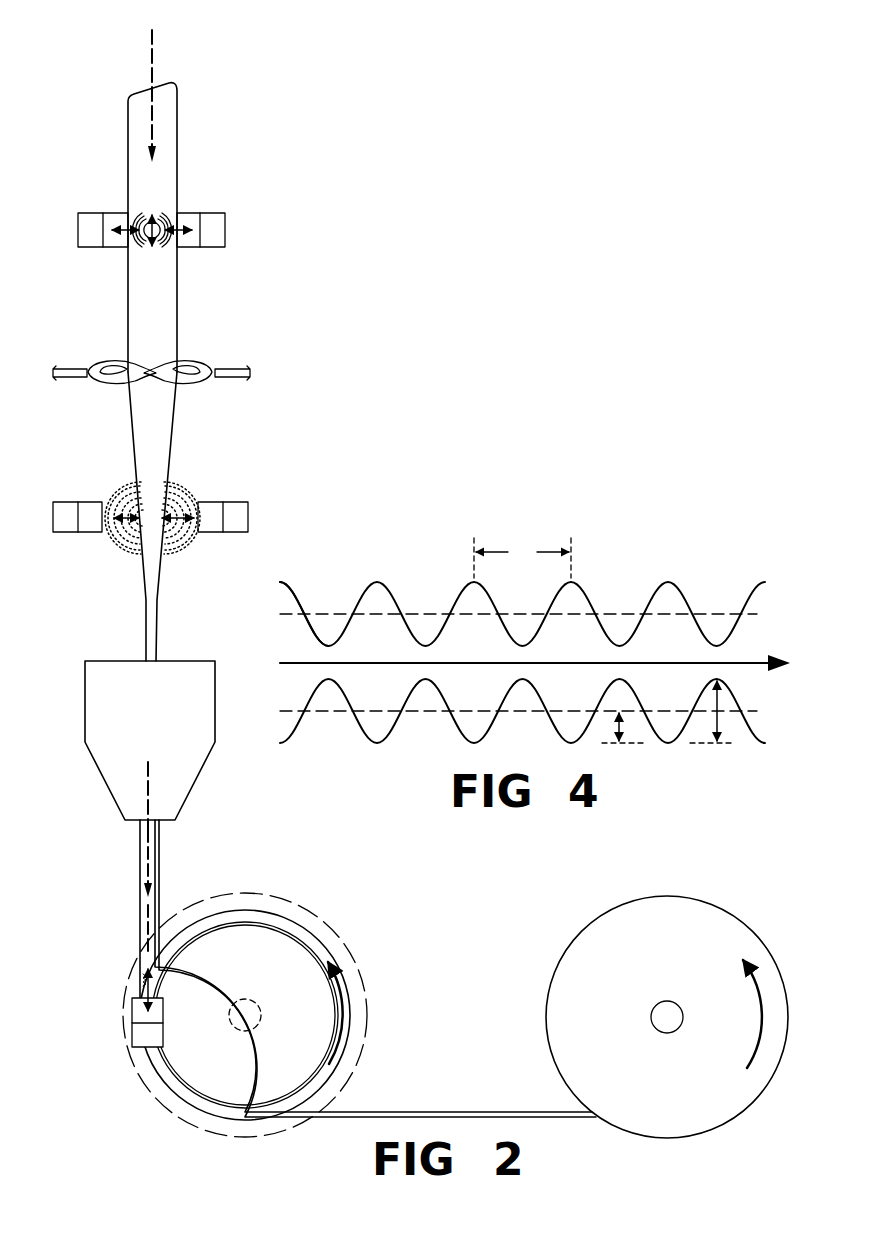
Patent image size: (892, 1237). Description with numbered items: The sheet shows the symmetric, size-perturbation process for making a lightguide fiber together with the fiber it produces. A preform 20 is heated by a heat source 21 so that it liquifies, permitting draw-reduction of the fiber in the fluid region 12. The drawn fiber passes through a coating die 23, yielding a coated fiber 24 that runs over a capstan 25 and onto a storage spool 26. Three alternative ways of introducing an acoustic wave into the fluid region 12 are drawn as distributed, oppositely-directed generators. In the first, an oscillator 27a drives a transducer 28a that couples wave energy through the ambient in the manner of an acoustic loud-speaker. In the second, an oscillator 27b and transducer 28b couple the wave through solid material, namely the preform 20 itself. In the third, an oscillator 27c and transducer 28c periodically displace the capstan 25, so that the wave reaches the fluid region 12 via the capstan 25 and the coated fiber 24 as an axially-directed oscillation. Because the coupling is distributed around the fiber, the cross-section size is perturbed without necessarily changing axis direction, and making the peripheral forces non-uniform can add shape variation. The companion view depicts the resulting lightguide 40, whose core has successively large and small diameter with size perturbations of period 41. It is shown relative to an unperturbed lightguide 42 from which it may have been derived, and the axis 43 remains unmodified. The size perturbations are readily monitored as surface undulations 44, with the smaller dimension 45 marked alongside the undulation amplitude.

In FIG. 2, the fluid region 12 is at (171, 440).
In FIG. 2, the preform 20 is at (122, 113).
In FIG. 2, the heat source 21 is at (78, 368).
In FIG. 2, the coating die 23 is at (118, 660).
In FIG. 2, the coated fiber 24 is at (139, 918).
In FIG. 2, the capstan 25 is at (245, 892).
In FIG. 2, the storage spool 26 is at (667, 894).
In FIG. 2, the oscillator 27a is at (66, 533).
In FIG. 2, the oscillator 27b is at (92, 248).
In FIG. 2, the oscillator 27c is at (131, 1040).
In FIG. 2, the transducer 28a is at (95, 501).
In FIG. 2, the transducer 28b is at (117, 212).
In FIG. 2, the transducer 28c is at (163, 1010).
In FIG. 4, the lightguide 40 is at (379, 562).
In FIG. 4, the period of size perturbations 41 is at (522, 558).
In FIG. 4, the unperturbed lightguide 42 is at (340, 613).
In FIG. 4, the axis 43 is at (288, 661).
In FIG. 4, the surface undulations 44 is at (713, 728).
In FIG. 4, the half amplitude 45 is at (624, 730).